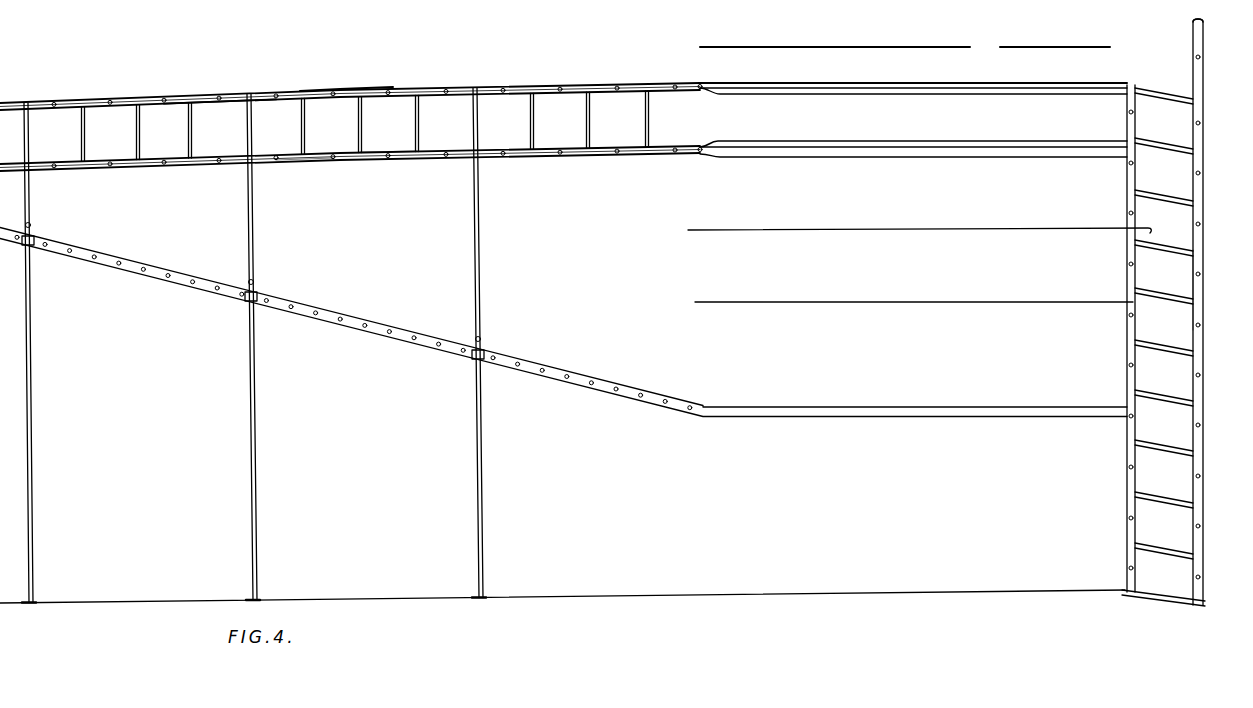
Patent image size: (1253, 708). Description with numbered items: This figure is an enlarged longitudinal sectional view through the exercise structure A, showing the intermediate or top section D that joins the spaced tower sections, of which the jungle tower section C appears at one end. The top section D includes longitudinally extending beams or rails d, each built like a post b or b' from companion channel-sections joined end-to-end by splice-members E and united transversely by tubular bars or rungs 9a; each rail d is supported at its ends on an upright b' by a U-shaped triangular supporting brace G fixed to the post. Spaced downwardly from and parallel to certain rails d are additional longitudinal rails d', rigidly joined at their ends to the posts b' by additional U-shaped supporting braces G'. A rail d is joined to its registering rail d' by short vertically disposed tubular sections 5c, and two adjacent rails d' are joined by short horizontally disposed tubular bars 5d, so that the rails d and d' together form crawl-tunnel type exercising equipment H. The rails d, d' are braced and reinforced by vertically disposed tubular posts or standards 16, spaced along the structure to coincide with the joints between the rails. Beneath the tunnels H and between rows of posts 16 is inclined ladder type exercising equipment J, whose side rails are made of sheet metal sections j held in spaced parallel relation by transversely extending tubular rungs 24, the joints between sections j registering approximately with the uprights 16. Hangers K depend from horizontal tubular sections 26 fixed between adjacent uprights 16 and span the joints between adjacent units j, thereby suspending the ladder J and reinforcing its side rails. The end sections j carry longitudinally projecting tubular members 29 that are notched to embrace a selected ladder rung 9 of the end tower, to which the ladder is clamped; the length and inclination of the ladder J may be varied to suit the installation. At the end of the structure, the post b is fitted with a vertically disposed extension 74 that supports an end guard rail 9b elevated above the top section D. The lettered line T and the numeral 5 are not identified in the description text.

The structure A is at (351, 128).
The intermediate or top section D is at (152, 97).
The longitudinally extending beam or rail d is at (220, 85).
The additional longitudinal rail d' is at (351, 171).
The short vertically disposed tubular section 5c is at (305, 126).
The short horizontally disposed tubular bar 5d is at (281, 161).
The tubular bar or rung 9a is at (393, 91).
The crawl-tunnel type exercising equipment H is at (374, 160).
The tie rod T is at (689, 81).
The U-shaped triangular supporting brace G is at (900, 96).
The additional U-shaped supporting brace G' is at (900, 139).
The post or standard 16 is at (33, 338).
The inclined ladder type exercising equipment J is at (586, 314).
The rail-forming section j is at (181, 298).
The tubular bar or rung 24 is at (119, 266).
The hanger K is at (36, 243).
The tubular section 26 is at (31, 230).
The longitudinally projecting tubular member 29 is at (1137, 408).
The jungle tower section C is at (908, 234).
The post or upright b' is at (903, 300).
The splice-member E is at (1183, 310).
The ladder rung 9 is at (1195, 325).
The vertically disposed extension 74 is at (1205, 66).
The end guard rail 9b is at (1205, 24).
The post or upright b is at (1212, 290).
The rung 5 is at (1152, 490).